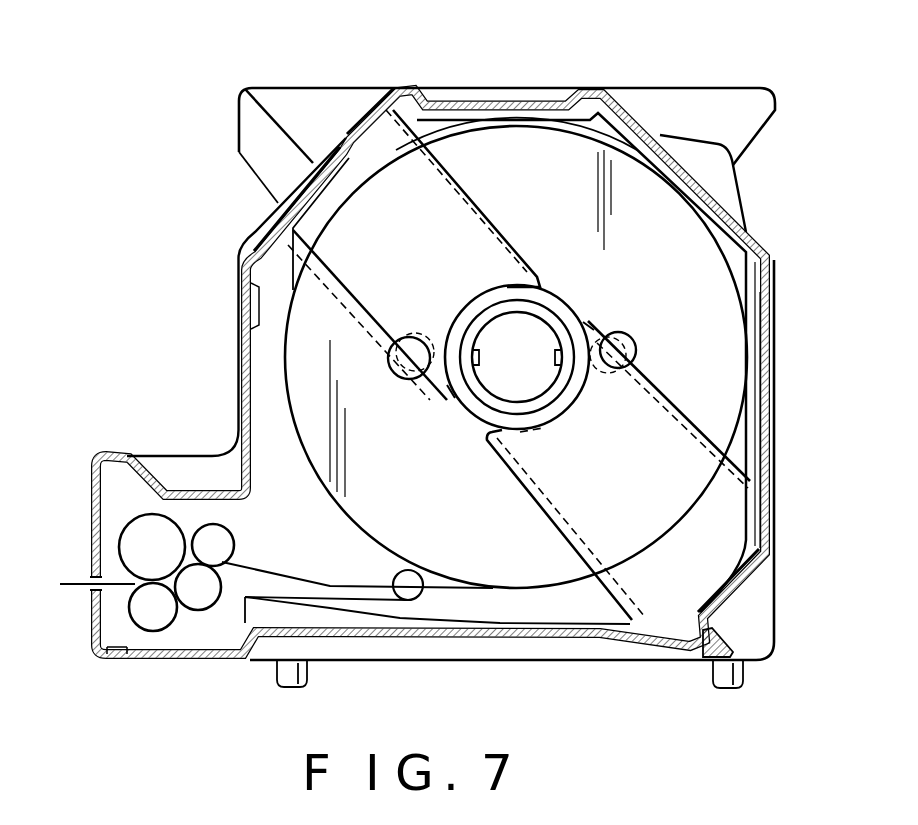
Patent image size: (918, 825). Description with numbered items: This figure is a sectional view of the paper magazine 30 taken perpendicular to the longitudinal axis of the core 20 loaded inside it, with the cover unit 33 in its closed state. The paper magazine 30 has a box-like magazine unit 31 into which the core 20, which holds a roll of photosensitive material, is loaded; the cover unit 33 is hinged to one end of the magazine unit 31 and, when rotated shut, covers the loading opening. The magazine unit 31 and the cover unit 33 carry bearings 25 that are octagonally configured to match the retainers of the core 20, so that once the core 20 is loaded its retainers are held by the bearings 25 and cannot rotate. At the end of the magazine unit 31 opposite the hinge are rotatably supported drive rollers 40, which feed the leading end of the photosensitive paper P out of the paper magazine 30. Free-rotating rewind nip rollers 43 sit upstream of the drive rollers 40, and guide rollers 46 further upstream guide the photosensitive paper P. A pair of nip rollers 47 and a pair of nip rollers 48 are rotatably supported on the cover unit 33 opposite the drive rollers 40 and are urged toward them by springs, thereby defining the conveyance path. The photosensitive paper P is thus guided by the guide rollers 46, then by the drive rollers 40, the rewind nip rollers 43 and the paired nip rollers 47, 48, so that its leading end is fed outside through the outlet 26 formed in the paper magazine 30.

The paper magazine 30 is at (356, 77).
The magazine unit 31 is at (258, 233).
The core 20 is at (673, 228).
The bearings 25 is at (447, 202).
The cover unit 33 is at (771, 355).
The drive rollers 40 is at (130, 530).
The nip rollers 43 is at (220, 547).
The guide rollers 46 is at (404, 583).
The nip rollers 47 is at (153, 617).
The nip rollers 48 is at (202, 597).
The outlet 26 is at (88, 577).
The photosensitive paper P is at (70, 588).